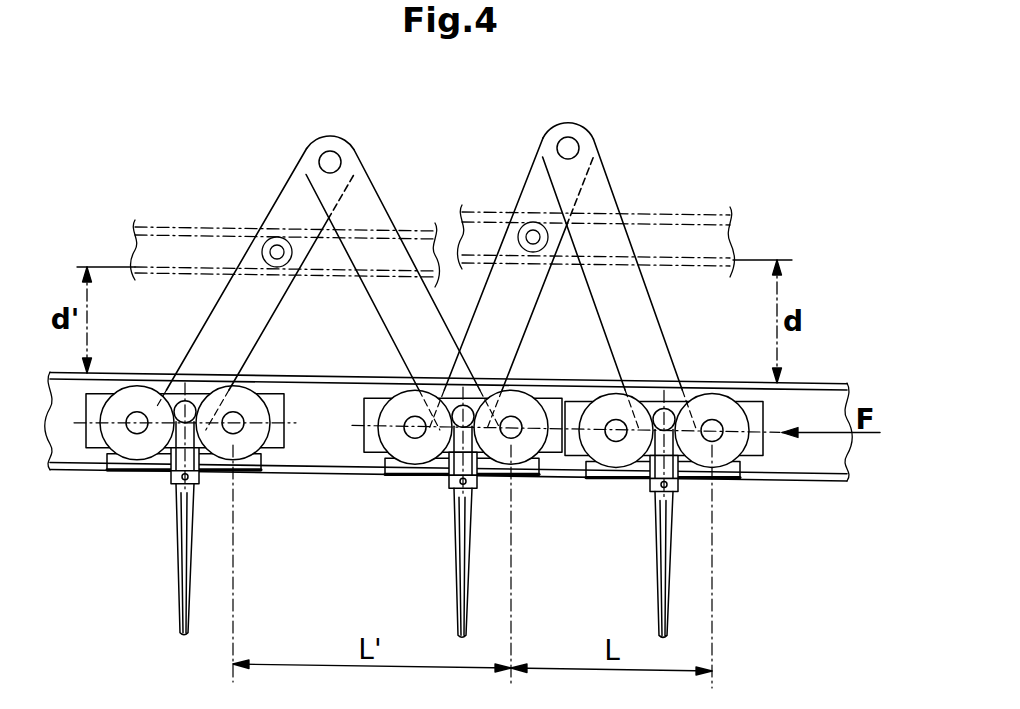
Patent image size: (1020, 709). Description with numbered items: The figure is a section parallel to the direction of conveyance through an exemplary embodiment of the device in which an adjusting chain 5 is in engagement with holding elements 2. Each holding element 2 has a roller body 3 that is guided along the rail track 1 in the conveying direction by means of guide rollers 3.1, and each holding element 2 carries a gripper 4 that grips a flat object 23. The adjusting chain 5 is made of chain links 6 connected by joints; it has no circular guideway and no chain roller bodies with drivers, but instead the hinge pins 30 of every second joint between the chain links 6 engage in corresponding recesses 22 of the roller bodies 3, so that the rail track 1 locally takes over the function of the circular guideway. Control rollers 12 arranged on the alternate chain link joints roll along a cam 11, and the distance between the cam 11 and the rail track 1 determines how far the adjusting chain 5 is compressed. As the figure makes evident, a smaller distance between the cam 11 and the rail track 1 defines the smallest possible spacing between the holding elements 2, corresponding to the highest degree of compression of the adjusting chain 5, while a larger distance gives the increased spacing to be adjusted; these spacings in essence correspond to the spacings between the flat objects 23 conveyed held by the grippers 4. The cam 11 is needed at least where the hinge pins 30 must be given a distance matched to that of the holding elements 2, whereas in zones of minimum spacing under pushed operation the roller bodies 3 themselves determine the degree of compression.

The rail track 1 is at (820, 385).
The holding element 2 is at (203, 509).
The roller body 3 is at (745, 483).
The guide roller 3.1 is at (685, 505).
The gripper 4 is at (147, 488).
The adjusting chain 5 is at (420, 163).
The chain link 6 is at (600, 193).
The cam 11 is at (189, 227).
The control roller 12 is at (507, 215).
The recess 22 is at (278, 465).
The object 23 is at (138, 559).
The hinge pin 30 is at (665, 387).